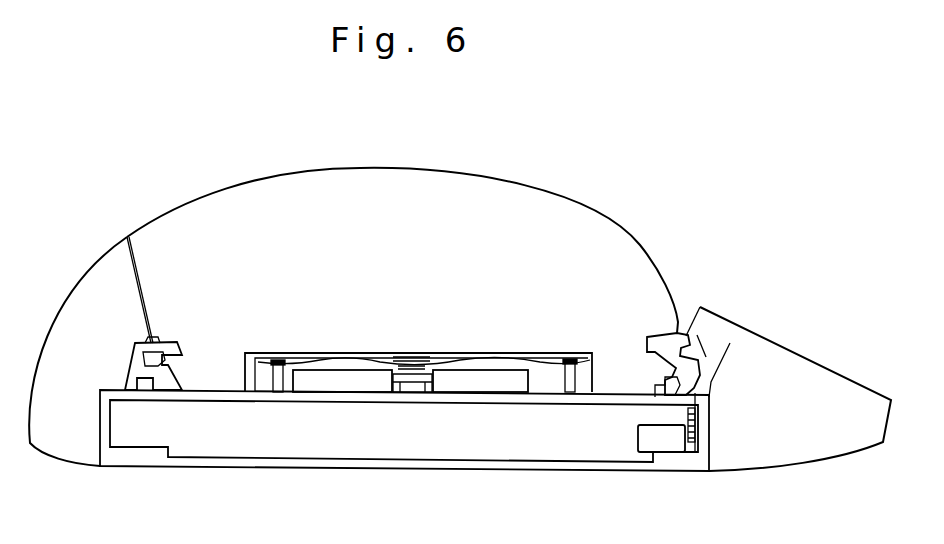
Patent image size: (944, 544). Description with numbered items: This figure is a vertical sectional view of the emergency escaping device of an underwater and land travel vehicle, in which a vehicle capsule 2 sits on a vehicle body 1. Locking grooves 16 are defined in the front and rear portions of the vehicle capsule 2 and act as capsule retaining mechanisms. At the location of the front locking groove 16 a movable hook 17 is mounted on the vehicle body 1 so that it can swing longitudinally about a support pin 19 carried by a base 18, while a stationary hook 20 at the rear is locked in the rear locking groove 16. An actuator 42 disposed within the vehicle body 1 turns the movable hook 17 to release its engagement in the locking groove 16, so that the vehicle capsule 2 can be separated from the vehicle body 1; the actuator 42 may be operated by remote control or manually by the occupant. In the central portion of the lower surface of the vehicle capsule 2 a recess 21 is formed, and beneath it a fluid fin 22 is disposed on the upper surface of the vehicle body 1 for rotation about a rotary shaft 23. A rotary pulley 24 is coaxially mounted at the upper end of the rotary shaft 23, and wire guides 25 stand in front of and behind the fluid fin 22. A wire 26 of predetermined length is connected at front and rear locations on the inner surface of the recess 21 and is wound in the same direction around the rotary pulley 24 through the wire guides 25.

The vehicle body 1 is at (815, 370).
The vehicle capsule 2 is at (548, 193).
The locking grooves 16 is at (152, 343).
The movable hook 17 is at (688, 360).
The base 18 is at (663, 393).
The support pin 19 is at (710, 395).
The stationary hook 20 is at (153, 362).
The recess 21 is at (254, 382).
The fluid fin 22 is at (352, 383).
The rotary shaft 23 is at (412, 393).
The rotary pulley 24 is at (412, 357).
The wire guides 25 is at (277, 367).
The wire 26 is at (492, 356).
The actuator 42 is at (670, 445).